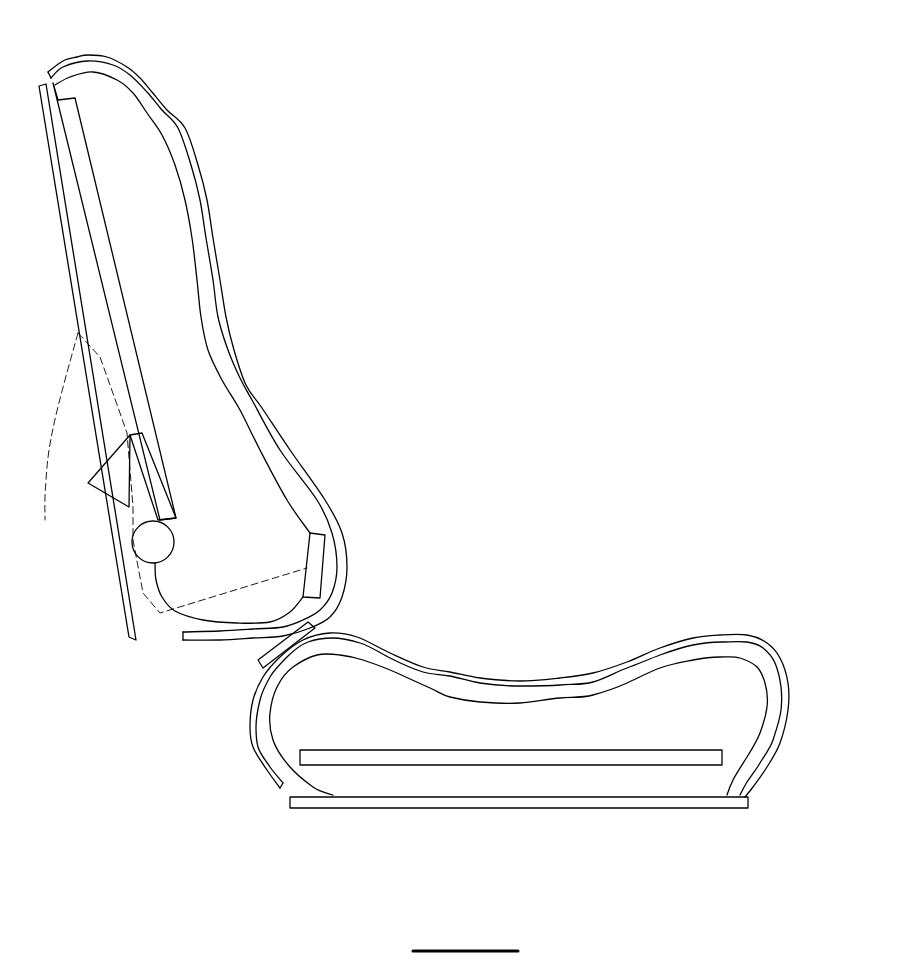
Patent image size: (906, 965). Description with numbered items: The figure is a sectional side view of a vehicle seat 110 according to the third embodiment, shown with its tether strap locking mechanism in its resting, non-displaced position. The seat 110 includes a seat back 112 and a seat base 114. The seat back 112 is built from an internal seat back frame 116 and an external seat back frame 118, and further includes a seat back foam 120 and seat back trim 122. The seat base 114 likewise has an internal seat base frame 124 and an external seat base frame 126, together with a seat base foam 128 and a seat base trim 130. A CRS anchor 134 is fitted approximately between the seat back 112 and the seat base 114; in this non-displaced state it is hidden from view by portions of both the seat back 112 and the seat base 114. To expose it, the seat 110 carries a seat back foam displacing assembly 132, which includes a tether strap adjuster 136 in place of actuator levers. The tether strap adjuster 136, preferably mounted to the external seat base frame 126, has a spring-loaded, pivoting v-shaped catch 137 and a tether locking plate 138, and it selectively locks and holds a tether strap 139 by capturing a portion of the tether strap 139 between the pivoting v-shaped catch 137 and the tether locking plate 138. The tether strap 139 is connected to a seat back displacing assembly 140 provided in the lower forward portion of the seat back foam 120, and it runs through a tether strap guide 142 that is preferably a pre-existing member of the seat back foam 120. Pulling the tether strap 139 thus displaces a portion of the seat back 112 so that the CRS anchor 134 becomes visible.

The seat 110 is at (349, 116).
The seat back 112 is at (122, 117).
The seat base 114 is at (617, 715).
The internal seat back frame 116 is at (100, 230).
The external seat back frame 118 is at (72, 260).
The seat back foam 120 is at (183, 380).
The seat back trim 122 is at (307, 473).
The internal seat base frame 124 is at (430, 760).
The external seat base frame 126 is at (566, 810).
The seat base foam 128 is at (718, 703).
The seat base trim 130 is at (777, 750).
The seat back foam displacing assembly 132 is at (145, 500).
The CRS anchor 134 is at (258, 665).
The tether strap adjuster 136 is at (88, 483).
The pivoting v-shaped catch 137 is at (127, 500).
The tether locking plate 138 is at (138, 458).
The tether strap 139 is at (50, 468).
The seat back displacing assembly 140 is at (318, 560).
The tether strap guide 142 is at (153, 552).